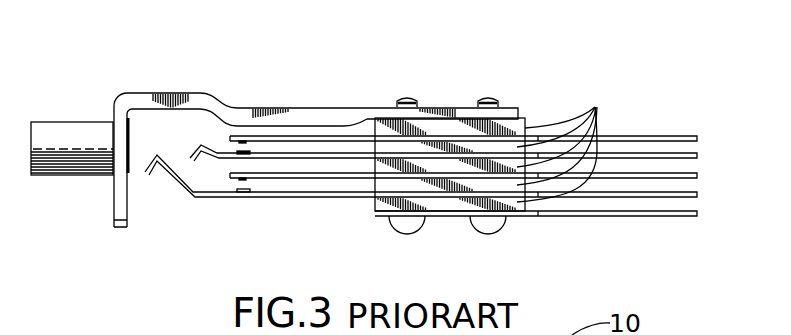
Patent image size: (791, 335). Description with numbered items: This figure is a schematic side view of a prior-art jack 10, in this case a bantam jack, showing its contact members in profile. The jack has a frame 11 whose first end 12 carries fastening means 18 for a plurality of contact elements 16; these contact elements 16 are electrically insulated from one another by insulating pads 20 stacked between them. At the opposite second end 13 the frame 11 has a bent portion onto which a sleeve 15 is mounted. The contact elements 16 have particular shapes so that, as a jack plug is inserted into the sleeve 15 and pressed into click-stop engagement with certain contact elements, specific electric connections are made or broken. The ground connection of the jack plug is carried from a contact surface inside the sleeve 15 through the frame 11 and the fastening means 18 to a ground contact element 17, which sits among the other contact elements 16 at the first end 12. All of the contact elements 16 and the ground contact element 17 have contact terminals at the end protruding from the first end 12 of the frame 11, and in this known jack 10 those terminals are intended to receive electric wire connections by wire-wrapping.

The jack 10 is at (510, 68).
The frame 11 is at (273, 108).
The first end 12 is at (457, 110).
The second end 13 is at (120, 203).
The sleeve 15 is at (70, 160).
The contact elements 16 is at (315, 135).
The ground contact element 17 is at (438, 217).
The fastening means 18 is at (407, 225).
The insulating pads 20 is at (607, 146).